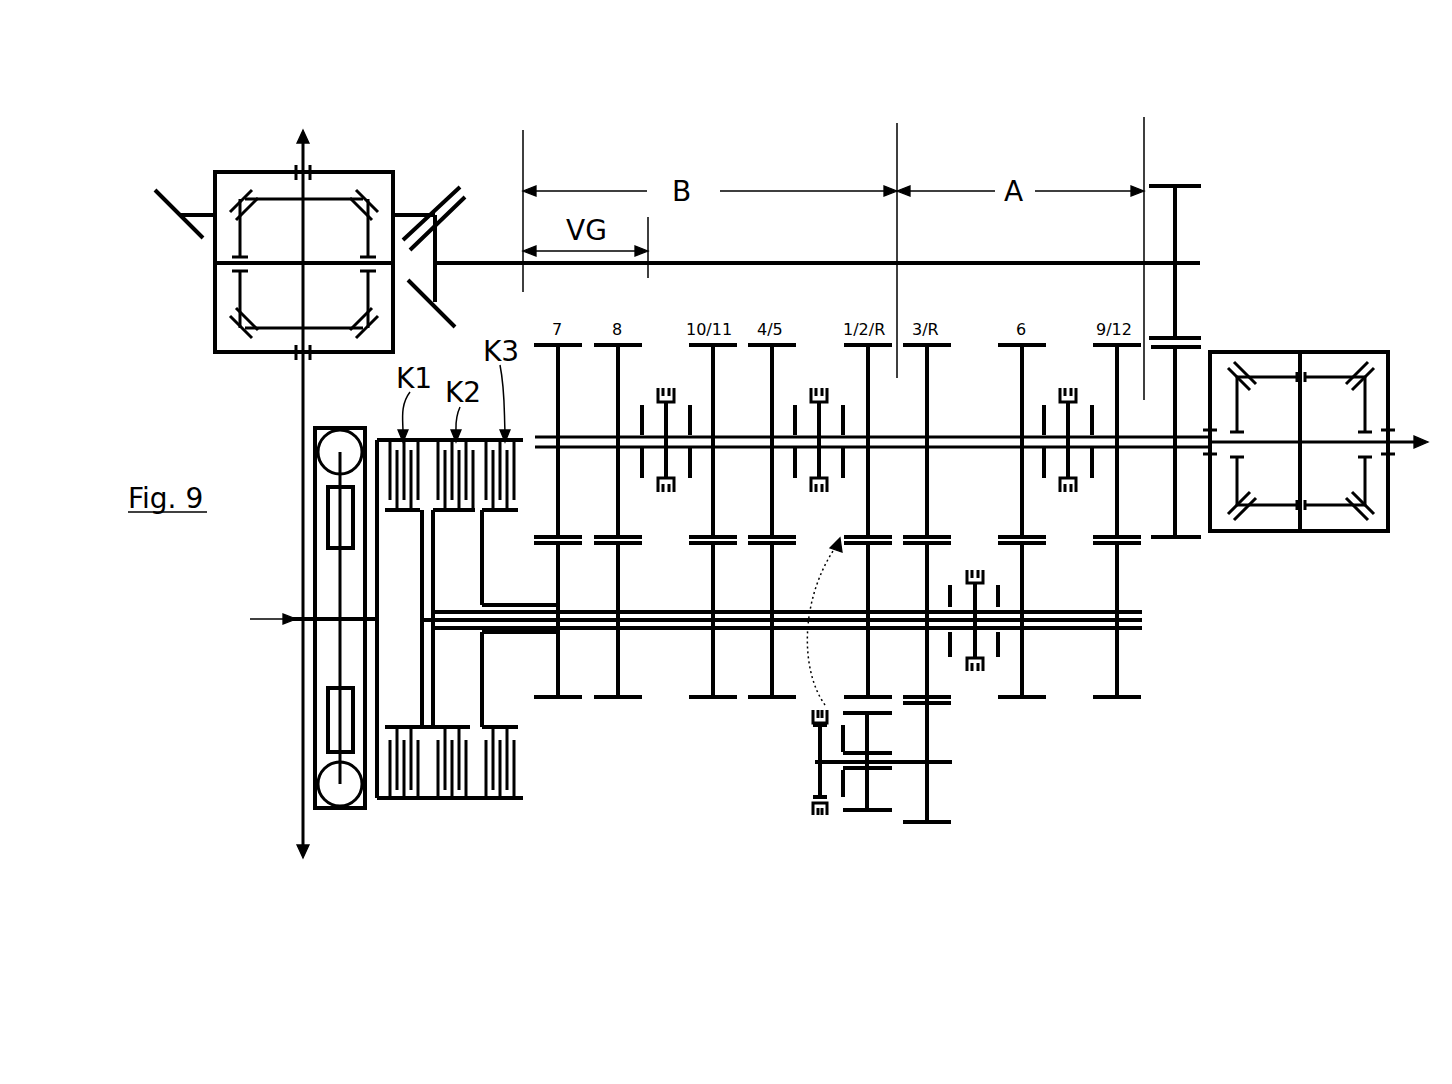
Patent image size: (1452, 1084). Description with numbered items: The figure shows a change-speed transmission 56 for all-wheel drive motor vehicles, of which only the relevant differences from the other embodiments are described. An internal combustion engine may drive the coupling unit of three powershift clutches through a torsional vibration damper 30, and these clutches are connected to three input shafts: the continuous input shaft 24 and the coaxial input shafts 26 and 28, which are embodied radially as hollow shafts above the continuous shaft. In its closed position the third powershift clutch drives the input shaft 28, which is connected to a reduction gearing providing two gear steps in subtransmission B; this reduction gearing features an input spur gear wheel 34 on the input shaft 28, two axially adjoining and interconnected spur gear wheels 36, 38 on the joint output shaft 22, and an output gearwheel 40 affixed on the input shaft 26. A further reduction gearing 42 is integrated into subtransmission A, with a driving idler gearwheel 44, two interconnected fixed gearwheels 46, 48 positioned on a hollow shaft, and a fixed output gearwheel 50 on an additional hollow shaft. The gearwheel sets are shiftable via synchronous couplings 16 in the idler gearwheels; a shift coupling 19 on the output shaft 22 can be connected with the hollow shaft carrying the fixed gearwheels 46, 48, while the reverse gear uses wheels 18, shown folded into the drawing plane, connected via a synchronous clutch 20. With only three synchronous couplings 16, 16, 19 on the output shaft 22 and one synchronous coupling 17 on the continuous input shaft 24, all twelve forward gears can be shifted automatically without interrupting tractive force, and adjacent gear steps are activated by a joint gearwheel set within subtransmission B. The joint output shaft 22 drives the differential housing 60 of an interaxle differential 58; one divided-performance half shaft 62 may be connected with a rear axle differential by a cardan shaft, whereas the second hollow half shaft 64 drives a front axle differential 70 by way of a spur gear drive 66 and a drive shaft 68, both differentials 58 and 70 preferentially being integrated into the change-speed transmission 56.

The front axle differential 70 is at (414, 172).
The drive shaft 68 is at (830, 262).
The torsional vibration damper 30 is at (343, 832).
The input shaft 28 is at (518, 604).
The input shaft 26 is at (658, 630).
The output gearwheel 40 is at (618, 700).
The output shaft 22 is at (833, 450).
The spur gear wheel 36 is at (558, 385).
The spur gear wheel 38 is at (619, 370).
The reduction gearing 42 is at (984, 368).
The fixed gearwheel 46 is at (927, 396).
The fixed gearwheel 48 is at (1025, 368).
The input spur gear wheel 34 is at (546, 690).
The wheels 18 is at (928, 825).
The fixed output gearwheel 50 is at (1025, 652).
The change-speed transmission 56 is at (1195, 664).
The driving idler gearwheel 44 is at (928, 664).
The synchronous coupling 16 is at (818, 372).
The shift coupling 19 is at (1068, 370).
The input shaft 24 is at (952, 612).
The synchronous coupling 17 is at (977, 685).
The synchronous clutch 20 is at (805, 812).
The spur gear drive 66 is at (1184, 172).
The hollow half shaft 64 is at (1180, 410).
The interaxle differential 58 is at (1323, 420).
The differential housing 60 is at (1265, 533).
The half shaft 62 is at (1414, 436).